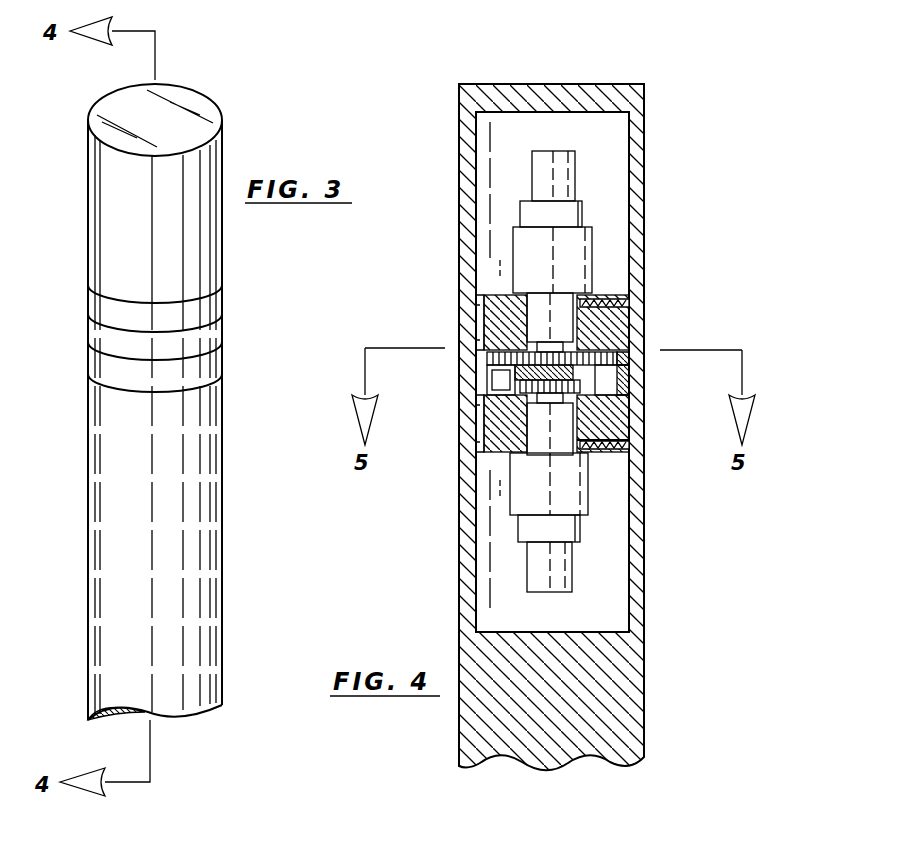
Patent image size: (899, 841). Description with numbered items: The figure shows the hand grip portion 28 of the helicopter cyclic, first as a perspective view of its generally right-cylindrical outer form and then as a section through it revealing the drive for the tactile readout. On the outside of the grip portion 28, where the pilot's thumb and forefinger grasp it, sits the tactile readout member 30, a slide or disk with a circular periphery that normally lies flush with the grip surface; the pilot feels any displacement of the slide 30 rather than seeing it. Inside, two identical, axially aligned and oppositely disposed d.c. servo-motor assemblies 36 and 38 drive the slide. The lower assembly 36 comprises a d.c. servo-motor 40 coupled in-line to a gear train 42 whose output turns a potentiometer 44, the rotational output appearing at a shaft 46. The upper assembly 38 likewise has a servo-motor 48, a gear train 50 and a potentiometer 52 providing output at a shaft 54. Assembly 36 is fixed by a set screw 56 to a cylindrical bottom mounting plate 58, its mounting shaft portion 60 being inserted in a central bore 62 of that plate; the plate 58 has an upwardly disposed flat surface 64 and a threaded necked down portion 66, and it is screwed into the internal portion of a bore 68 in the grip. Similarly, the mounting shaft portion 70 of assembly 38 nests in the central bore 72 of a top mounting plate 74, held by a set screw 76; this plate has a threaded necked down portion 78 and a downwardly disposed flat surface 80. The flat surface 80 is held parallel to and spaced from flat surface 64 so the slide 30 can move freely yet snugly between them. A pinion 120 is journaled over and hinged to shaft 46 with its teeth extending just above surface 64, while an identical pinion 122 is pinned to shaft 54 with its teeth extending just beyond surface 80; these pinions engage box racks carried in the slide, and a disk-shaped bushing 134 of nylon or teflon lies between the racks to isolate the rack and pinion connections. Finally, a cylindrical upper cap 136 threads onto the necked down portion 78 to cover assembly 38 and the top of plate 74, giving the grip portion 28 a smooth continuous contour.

In FIG. 3, the hand grip portion 28 is at (115, 466).
In FIG. 4, the hand grip portion 28 is at (627, 670).
In FIG. 3, the tactile readout member 30 is at (97, 325).
In FIG. 4, the tactile readout member 30 is at (632, 385).
In FIG. 4, the d.c. servo-motor assembly 36 is at (500, 518).
In FIG. 4, the d.c. servo-motor assembly 38 is at (503, 195).
In FIG. 4, the d.c. servo-motor 40 is at (574, 577).
In FIG. 4, the gear train 42 is at (580, 530).
In FIG. 4, the potentiometer 44 is at (588, 492).
In FIG. 4, the shaft 46 is at (632, 404).
In FIG. 4, the d.c. servo-motor 48 is at (575, 170).
In FIG. 4, the gear train 50 is at (582, 211).
In FIG. 4, the potentiometer 52 is at (592, 250).
In FIG. 4, the shaft 54 is at (632, 340).
In FIG. 4, the set screw 56 is at (620, 455).
In FIG. 3, the bottom mounting plate 58 is at (97, 358).
In FIG. 4, the bottom mounting plate 58 is at (632, 428).
In FIG. 4, the mounting shaft portion 60 is at (548, 440).
In FIG. 4, the bore 62 is at (510, 445).
In FIG. 4, the flat surface 64 is at (490, 388).
In FIG. 4, the necked down portion 66 is at (476, 440).
In FIG. 4, the bore 68 is at (492, 592).
In FIG. 4, the mounting shaft portion 70 is at (547, 300).
In FIG. 4, the bore 72 is at (510, 300).
In FIG. 3, the top mounting plate 74 is at (97, 290).
In FIG. 4, the top mounting plate 74 is at (490, 324).
In FIG. 4, the set screw 76 is at (632, 296).
In FIG. 4, the necked down portion 78 is at (476, 300).
In FIG. 4, the flat surface 80 is at (638, 362).
In FIG. 4, the pinion 120 is at (490, 410).
In FIG. 4, the pinion 122 is at (520, 350).
In FIG. 4, the disk-shaped bushing 134 is at (490, 372).
In FIG. 3, the upper cap 136 is at (113, 205).
In FIG. 4, the upper cap 136 is at (646, 118).